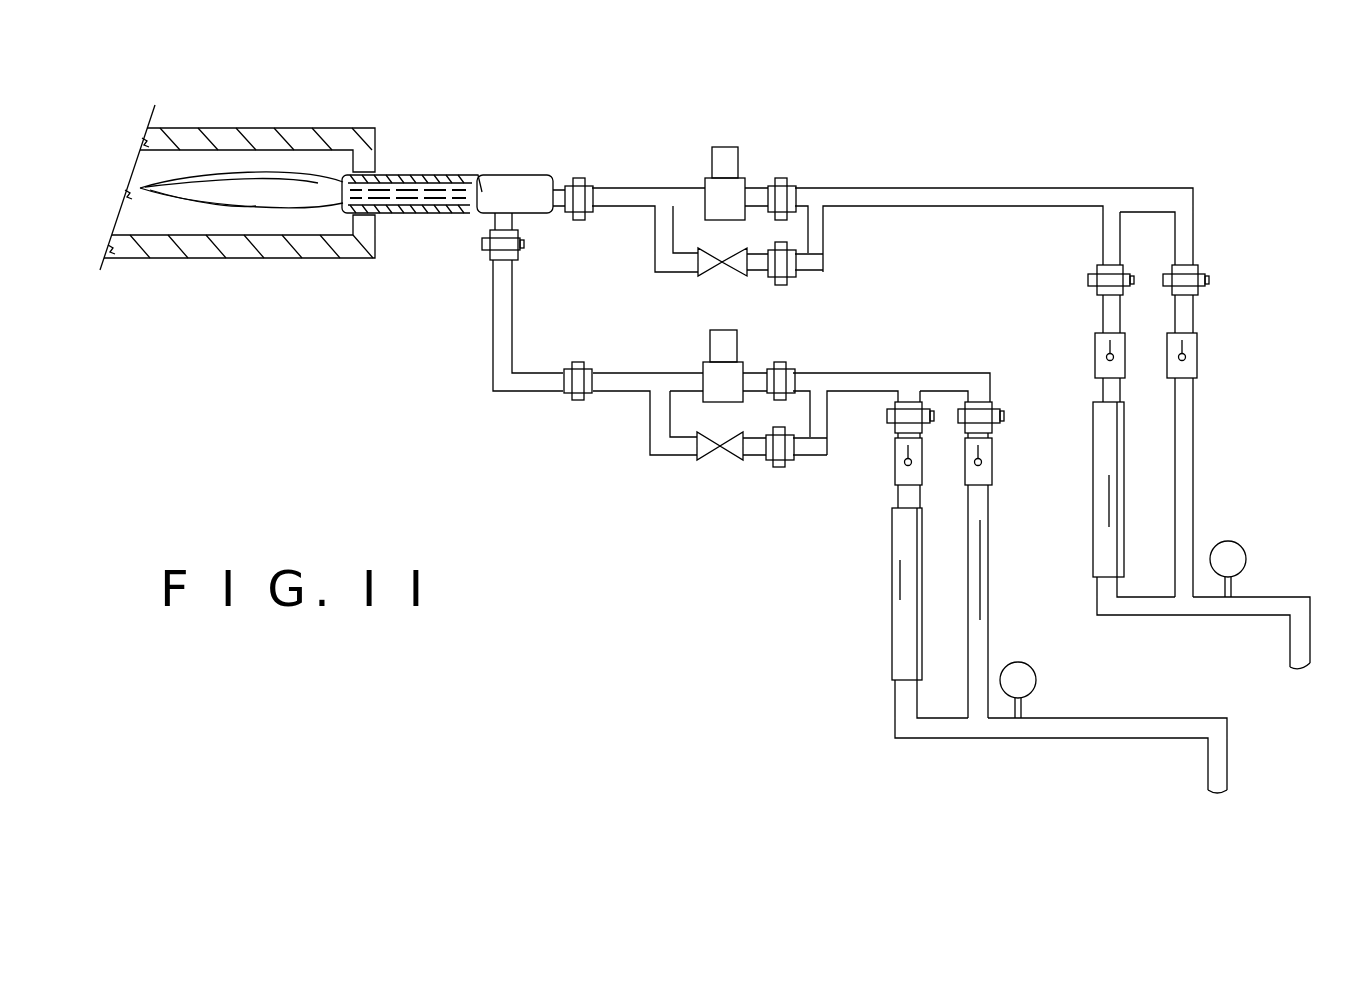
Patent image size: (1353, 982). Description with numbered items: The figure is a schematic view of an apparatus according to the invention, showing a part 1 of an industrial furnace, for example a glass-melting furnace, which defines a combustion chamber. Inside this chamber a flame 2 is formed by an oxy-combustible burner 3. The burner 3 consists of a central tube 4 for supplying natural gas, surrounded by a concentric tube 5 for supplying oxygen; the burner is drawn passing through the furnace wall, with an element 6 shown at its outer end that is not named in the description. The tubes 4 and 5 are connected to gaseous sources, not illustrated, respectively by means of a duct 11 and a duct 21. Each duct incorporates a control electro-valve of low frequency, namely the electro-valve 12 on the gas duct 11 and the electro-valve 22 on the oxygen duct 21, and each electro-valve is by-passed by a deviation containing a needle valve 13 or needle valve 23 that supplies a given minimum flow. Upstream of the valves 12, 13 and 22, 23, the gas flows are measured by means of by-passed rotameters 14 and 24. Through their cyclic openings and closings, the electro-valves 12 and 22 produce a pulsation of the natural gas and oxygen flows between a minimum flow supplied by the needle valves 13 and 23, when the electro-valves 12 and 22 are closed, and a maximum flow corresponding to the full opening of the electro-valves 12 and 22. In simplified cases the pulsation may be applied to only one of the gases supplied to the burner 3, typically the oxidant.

The part defining a combustion chamber 1 is at (238, 157).
The flame 2 is at (313, 185).
The oxy-combustible burner 3 is at (397, 168).
The central tube 4 is at (404, 208).
The concentric tube 5 is at (441, 215).
The cooling chamber 6 is at (456, 187).
The duct 11 is at (619, 188).
The control electro-valve of low frequency 12 is at (741, 188).
The needle valve 13 is at (707, 262).
The by-passed rotameter 14 is at (1105, 463).
The duct 21 is at (513, 323).
The control electro-valve of low frequency 22 is at (739, 380).
The needle valve 23 is at (707, 448).
The by-passed rotameter 24 is at (895, 575).